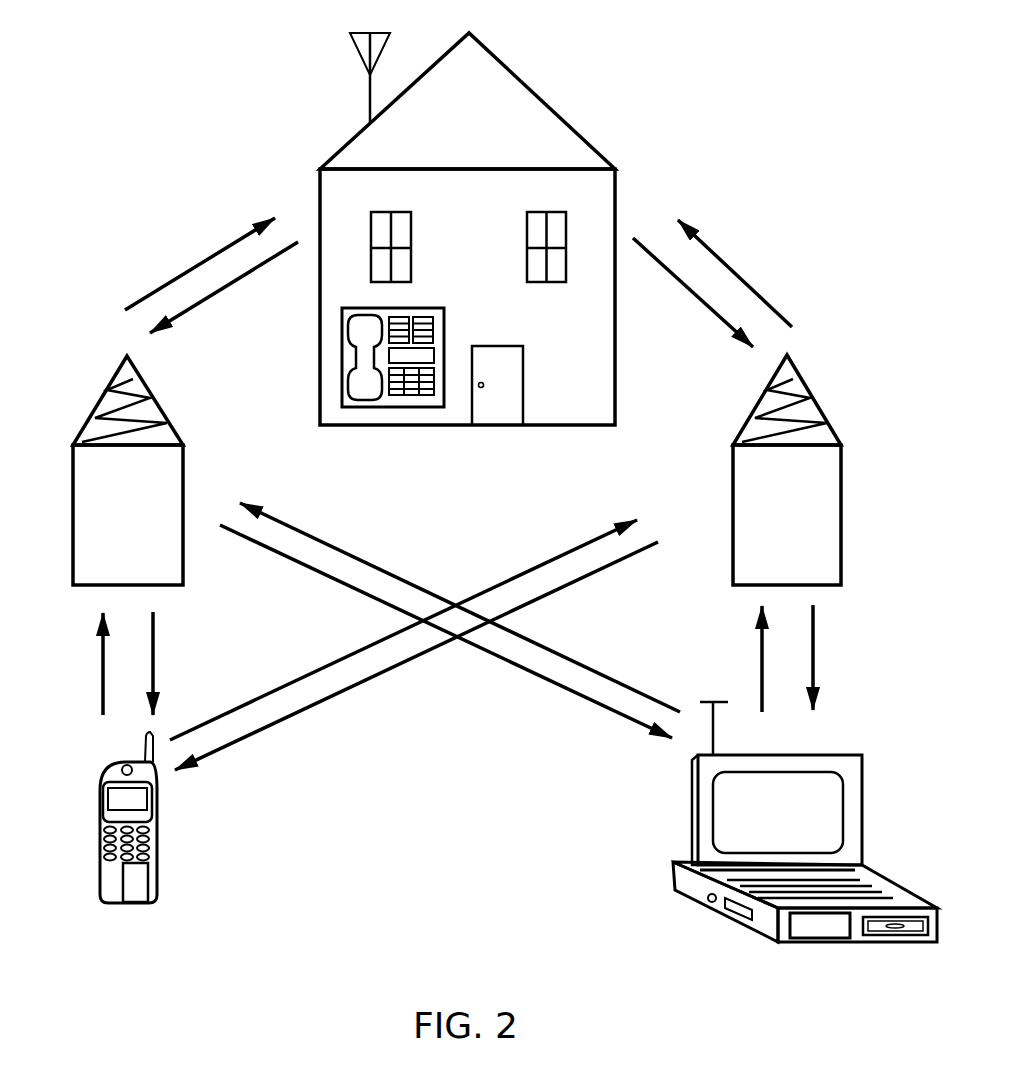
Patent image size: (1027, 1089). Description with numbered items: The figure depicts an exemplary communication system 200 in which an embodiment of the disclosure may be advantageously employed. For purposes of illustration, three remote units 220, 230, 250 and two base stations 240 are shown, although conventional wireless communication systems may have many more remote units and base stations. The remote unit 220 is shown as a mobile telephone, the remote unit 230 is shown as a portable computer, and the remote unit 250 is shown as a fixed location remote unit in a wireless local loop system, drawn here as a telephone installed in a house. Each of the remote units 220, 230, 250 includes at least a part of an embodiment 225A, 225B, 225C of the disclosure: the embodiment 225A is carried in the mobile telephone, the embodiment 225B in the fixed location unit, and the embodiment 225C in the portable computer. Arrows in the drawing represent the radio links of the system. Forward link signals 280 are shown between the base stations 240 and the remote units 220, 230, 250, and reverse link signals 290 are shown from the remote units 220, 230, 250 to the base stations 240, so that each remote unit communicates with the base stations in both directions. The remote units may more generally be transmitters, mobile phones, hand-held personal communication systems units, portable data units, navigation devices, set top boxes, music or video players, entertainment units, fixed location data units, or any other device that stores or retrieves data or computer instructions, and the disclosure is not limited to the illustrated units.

The communication system 200 is at (100, 41).
The remote unit 220 is at (103, 775).
The embodiment of the disclosure 225A is at (137, 888).
The embodiment of the disclosure 225B is at (421, 410).
The embodiment of the disclosure 225C is at (826, 927).
The remote unit 230 is at (838, 755).
The base station 240 is at (104, 393).
The remote unit 250 is at (342, 370).
The forward link signals 280 is at (204, 260).
The reverse link signals 290 is at (208, 298).